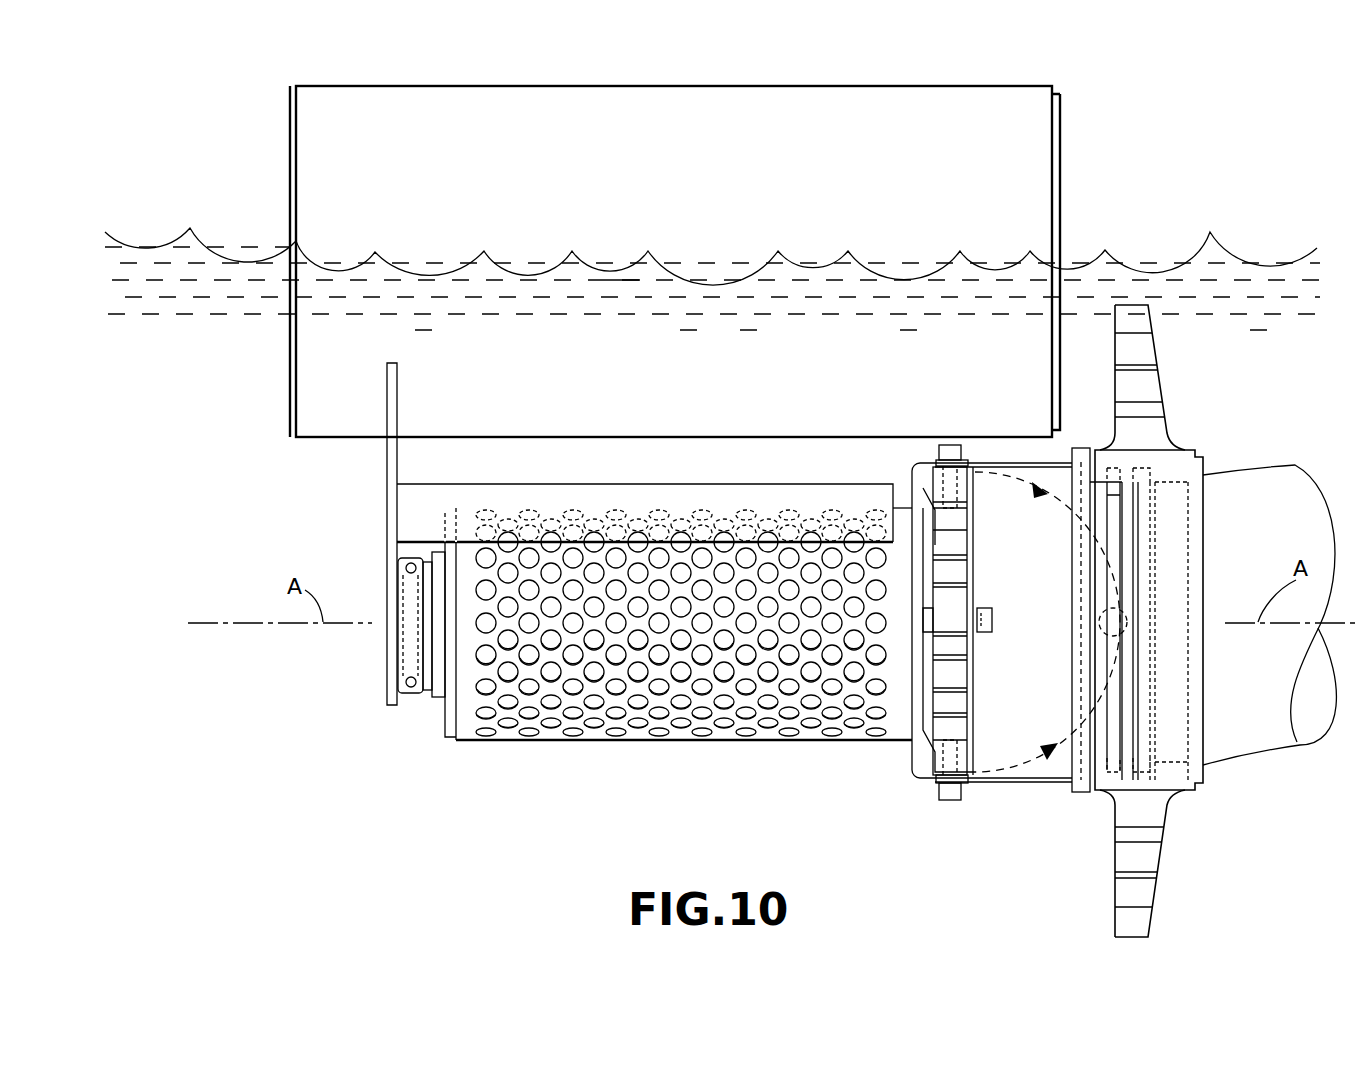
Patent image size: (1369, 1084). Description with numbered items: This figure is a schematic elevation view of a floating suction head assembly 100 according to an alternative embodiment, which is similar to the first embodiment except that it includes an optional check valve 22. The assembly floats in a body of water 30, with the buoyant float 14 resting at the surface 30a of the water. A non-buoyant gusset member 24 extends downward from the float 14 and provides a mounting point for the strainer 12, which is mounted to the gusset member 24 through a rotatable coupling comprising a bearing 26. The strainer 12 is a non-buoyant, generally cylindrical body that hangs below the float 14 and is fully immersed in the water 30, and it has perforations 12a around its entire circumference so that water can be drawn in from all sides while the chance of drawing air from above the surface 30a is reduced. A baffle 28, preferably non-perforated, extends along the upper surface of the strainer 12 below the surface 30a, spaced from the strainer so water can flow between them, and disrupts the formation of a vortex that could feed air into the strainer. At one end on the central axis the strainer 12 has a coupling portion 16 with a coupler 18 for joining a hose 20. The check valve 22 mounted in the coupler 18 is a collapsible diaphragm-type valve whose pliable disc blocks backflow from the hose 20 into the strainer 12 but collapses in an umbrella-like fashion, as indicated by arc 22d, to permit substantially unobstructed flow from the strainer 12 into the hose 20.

The floating suction head assembly 100 is at (823, 517).
The float 14 is at (669, 182).
The body of water 30 is at (192, 280).
The surface of the water 30a is at (427, 280).
The baffle 28 is at (524, 500).
The gusset member 24 is at (388, 469).
The bearing 26 is at (409, 703).
The strainer 12 is at (670, 656).
The perforations 12a is at (726, 704).
The coupling portion 16 is at (889, 750).
The check valve 22 is at (975, 592).
The arc 22d is at (1048, 757).
The coupler 18 is at (1108, 792).
The hose 20 is at (1245, 745).